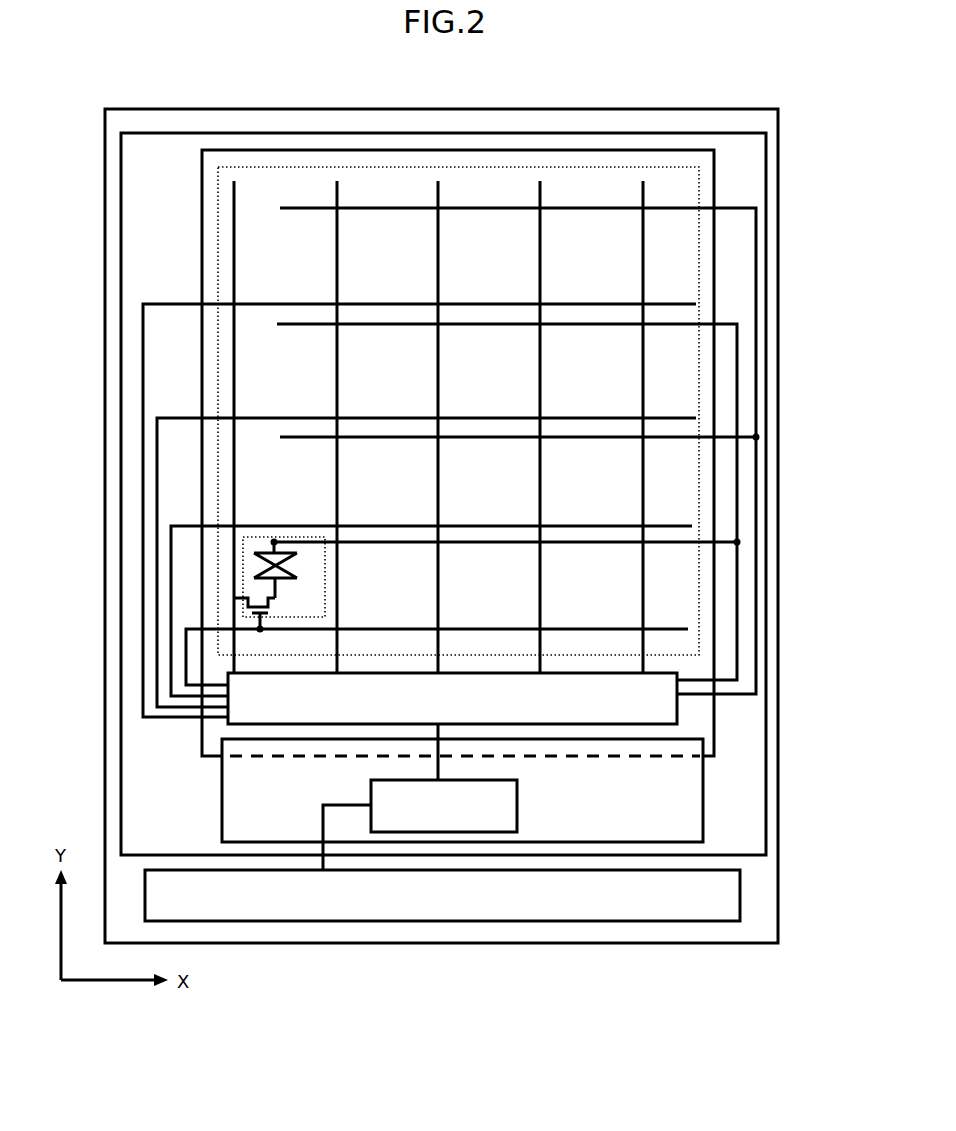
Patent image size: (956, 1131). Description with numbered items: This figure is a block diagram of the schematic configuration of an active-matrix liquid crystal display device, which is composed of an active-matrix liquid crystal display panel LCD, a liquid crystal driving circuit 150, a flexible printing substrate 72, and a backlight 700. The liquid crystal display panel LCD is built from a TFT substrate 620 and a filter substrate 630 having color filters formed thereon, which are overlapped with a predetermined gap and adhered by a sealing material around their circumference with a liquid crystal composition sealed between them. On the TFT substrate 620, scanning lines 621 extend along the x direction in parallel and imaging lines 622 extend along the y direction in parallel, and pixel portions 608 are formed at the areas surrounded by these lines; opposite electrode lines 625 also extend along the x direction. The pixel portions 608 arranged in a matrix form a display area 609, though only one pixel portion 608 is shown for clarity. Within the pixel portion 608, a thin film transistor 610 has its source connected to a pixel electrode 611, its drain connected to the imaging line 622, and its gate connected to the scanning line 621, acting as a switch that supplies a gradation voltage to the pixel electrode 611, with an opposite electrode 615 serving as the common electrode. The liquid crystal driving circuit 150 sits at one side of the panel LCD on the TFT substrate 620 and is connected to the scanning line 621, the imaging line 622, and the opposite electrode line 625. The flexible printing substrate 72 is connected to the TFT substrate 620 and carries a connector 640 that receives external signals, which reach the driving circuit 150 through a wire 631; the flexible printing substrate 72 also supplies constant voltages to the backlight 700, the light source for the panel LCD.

The active-matrix liquid crystal display panel LCD is at (338, 133).
The TFT substrate 620 is at (447, 138).
The filter substrate 630 is at (545, 153).
The display area 609 is at (630, 168).
The imaging lines 622 is at (236, 375).
The scanning lines 621 is at (489, 628).
The opposite electrode lines 625 is at (482, 435).
The pixel portion 608 is at (305, 536).
The opposite electrode 615 is at (266, 548).
The pixel electrode 611 is at (300, 576).
The thin film transistor 610 is at (275, 606).
The liquid crystal driving circuit 150 is at (660, 708).
The flexible printing substrate 72 is at (240, 792).
The wire 631 is at (440, 768).
The connector 640 is at (508, 806).
The backlight 700 is at (364, 903).